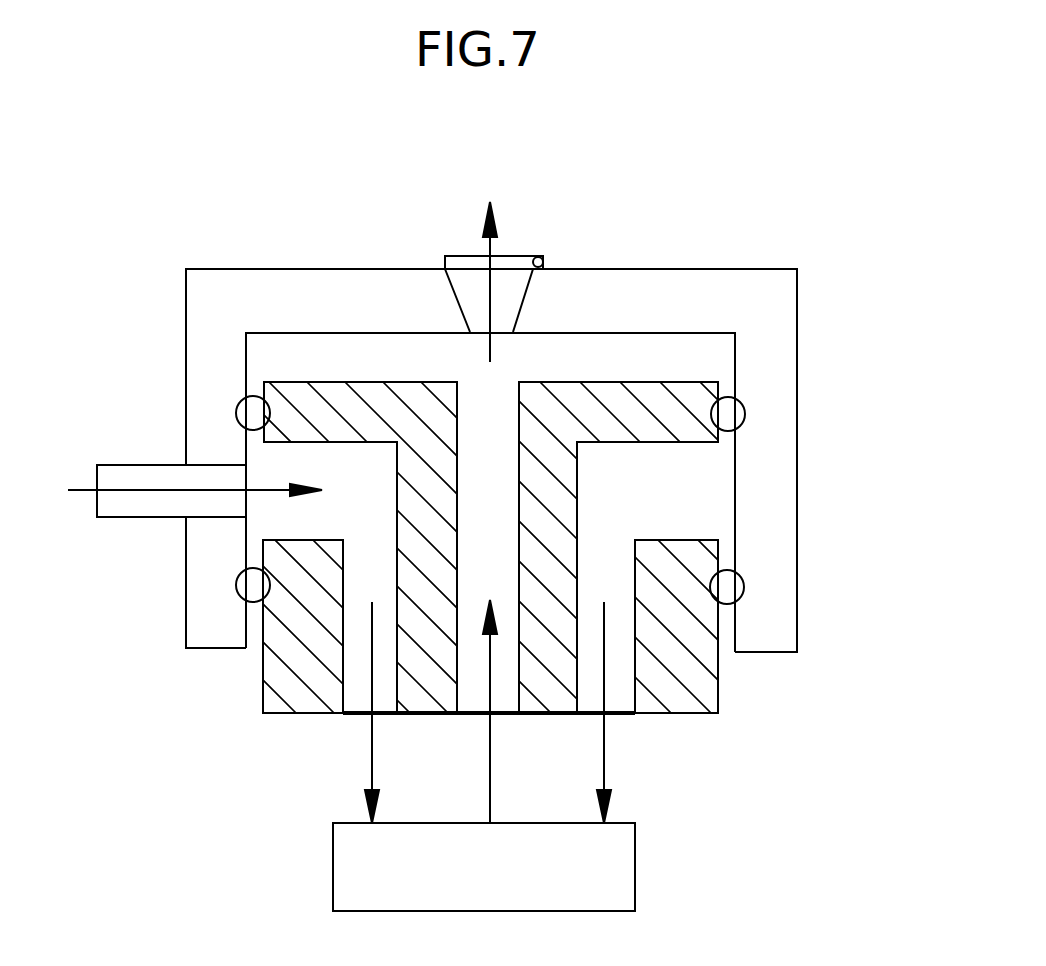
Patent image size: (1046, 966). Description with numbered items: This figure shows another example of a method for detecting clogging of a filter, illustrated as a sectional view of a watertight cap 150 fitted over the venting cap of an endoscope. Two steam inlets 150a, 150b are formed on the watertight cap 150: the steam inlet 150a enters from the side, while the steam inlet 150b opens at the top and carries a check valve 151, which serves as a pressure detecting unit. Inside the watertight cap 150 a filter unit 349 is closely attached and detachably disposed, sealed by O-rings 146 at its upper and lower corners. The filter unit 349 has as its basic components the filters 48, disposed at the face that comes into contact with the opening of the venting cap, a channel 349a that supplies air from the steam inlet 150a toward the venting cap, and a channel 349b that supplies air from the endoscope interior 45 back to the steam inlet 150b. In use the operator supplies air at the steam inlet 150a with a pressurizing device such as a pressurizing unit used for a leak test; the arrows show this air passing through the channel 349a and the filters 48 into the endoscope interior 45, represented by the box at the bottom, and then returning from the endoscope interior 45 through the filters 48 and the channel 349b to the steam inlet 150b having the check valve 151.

The watertight cap 150 is at (717, 297).
The steam inlet 150a is at (167, 505).
The steam inlet 150b is at (482, 298).
The check valve 151 is at (515, 260).
The O-ring 146 is at (243, 410).
The filter unit 349 is at (707, 687).
The channel 349a is at (355, 660).
The channel 349b is at (495, 553).
The filter 48 is at (467, 720).
The endoscope interior 45 is at (615, 887).